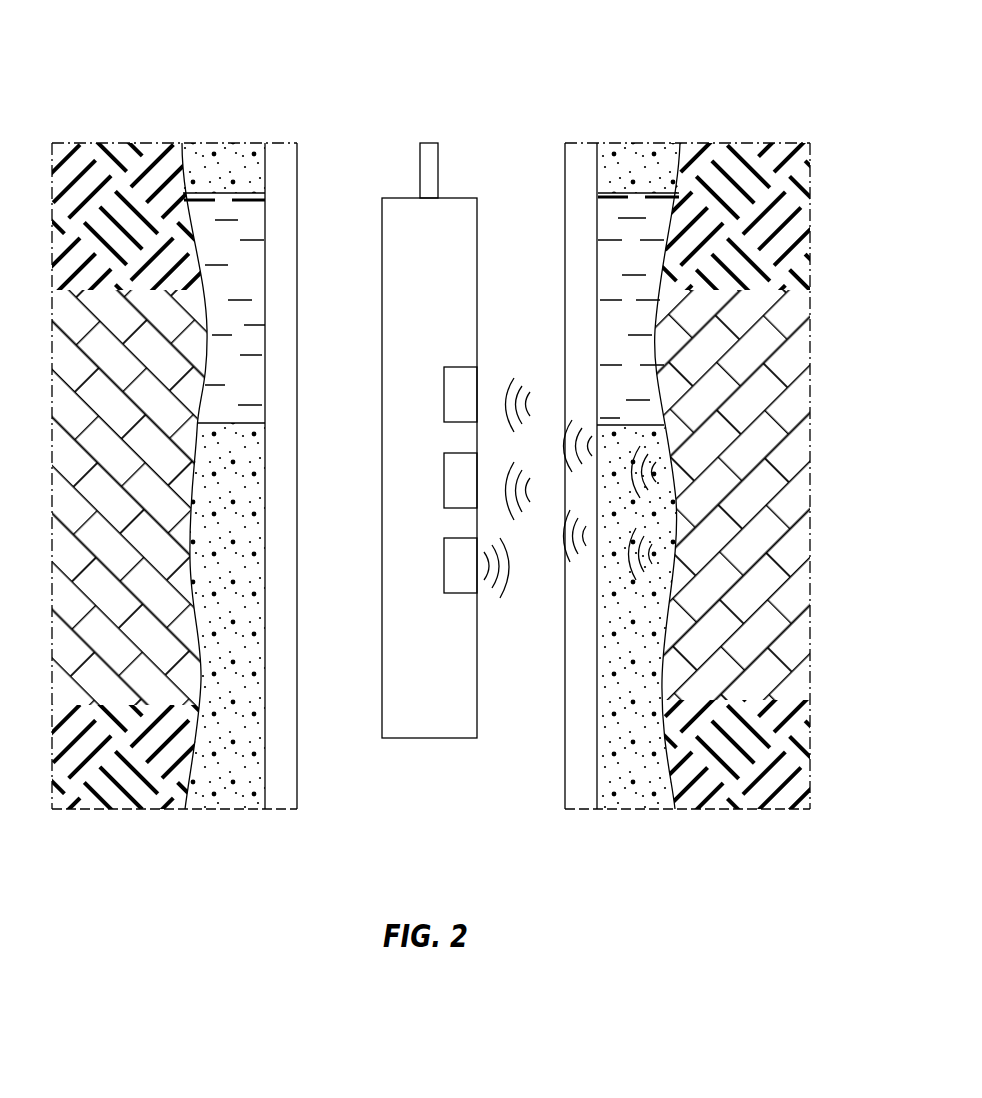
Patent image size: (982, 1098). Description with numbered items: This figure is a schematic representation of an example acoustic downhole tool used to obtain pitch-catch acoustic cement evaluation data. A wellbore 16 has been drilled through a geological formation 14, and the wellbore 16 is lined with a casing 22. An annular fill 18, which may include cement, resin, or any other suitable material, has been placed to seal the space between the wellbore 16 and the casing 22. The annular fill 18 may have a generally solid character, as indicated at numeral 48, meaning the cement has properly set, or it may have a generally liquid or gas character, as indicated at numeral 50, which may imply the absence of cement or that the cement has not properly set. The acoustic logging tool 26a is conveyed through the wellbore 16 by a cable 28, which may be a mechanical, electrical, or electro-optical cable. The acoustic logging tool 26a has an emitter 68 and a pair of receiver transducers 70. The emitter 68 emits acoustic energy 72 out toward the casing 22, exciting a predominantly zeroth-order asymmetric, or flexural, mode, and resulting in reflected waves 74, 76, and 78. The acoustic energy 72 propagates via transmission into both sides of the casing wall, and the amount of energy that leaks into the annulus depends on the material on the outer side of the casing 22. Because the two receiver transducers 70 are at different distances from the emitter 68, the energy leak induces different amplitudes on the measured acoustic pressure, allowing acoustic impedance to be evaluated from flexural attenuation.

The geological formation 14 is at (770, 522).
The wellbore 16 is at (337, 125).
The annular fill 18 is at (218, 108).
The casing 22 is at (284, 623).
The acoustic logging tool 26a is at (429, 468).
The cable 28 is at (438, 182).
The solid cement 48 is at (225, 448).
The liquid or gas character of annular fill 50 is at (225, 210).
The emitter 68 is at (444, 580).
The receiver transducers 70 is at (444, 392).
The acoustic energy 72 is at (508, 606).
The reflected wave 74 is at (513, 374).
The reflected wave 76 is at (582, 425).
The reflected wave 78 is at (645, 625).